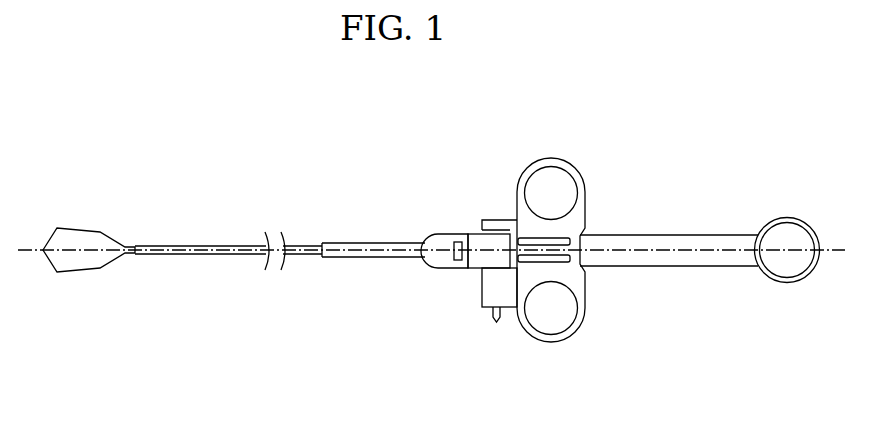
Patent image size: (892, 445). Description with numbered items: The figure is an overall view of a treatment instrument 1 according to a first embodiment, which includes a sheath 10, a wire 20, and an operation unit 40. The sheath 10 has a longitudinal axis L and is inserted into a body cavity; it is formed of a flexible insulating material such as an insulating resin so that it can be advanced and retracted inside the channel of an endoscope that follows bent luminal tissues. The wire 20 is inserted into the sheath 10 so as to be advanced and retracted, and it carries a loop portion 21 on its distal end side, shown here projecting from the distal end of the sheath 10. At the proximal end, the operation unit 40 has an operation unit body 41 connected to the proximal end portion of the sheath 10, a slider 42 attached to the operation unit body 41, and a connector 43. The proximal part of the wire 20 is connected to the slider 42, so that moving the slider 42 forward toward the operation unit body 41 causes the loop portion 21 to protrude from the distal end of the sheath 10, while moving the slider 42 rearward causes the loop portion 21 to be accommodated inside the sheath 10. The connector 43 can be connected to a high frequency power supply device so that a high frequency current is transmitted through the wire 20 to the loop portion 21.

The treatment instrument 1 is at (553, 115).
The sheath 10 is at (238, 245).
The wire 20 is at (177, 185).
The loop portion 21 is at (107, 232).
The operation unit 40 is at (583, 158).
The operation unit body 41 is at (660, 267).
The slider 42 is at (543, 338).
The connector 43 is at (498, 323).
The longitudinal axis L is at (303, 253).